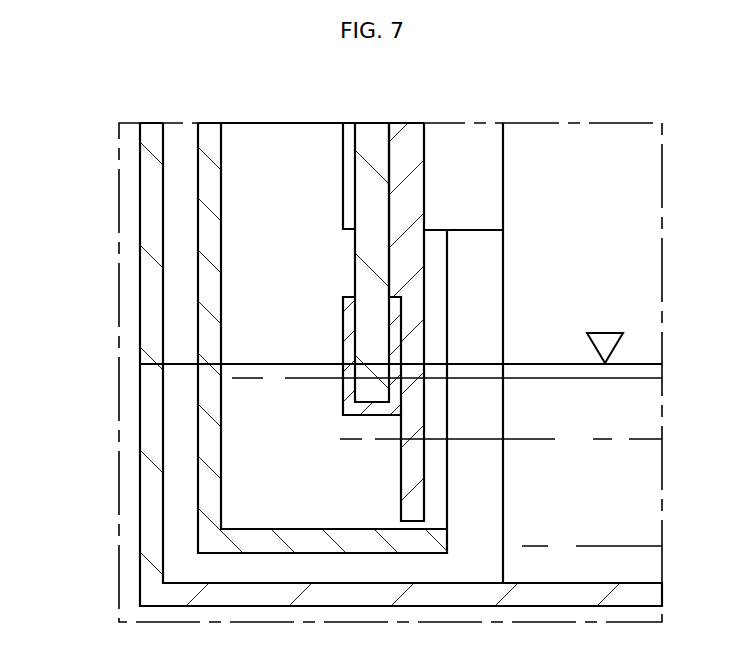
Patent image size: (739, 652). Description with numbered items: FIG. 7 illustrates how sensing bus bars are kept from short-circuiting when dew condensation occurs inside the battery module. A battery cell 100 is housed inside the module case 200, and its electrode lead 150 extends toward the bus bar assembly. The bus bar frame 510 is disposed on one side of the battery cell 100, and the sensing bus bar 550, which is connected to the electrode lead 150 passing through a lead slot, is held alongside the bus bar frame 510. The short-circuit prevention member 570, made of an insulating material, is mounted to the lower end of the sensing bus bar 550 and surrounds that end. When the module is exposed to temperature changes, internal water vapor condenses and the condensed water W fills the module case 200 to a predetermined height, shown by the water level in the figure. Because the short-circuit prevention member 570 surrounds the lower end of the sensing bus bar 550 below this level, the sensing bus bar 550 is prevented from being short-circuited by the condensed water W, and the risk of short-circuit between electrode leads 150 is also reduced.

The battery cell 100 is at (562, 170).
The module case 200 is at (111, 427).
The electrode lead 150 is at (350, 142).
The sensing bus bar 550 is at (373, 148).
The bus bar frame 510 is at (406, 142).
The short-circuit prevention member 570 is at (343, 319).
The condensed water W is at (627, 413).